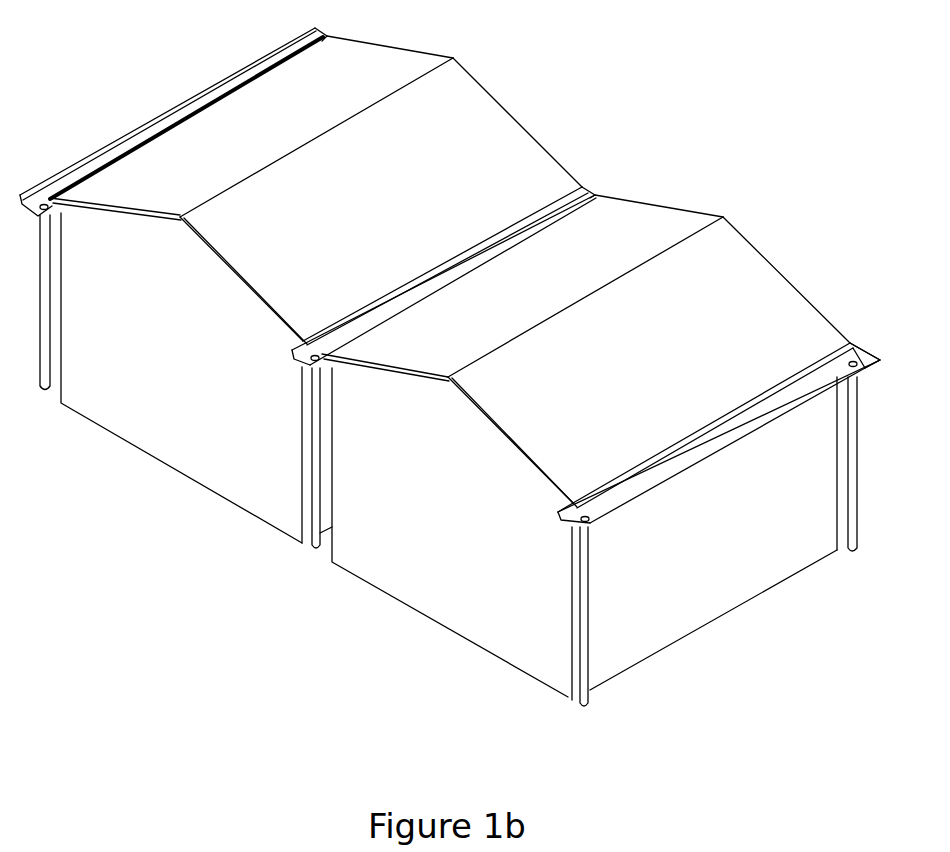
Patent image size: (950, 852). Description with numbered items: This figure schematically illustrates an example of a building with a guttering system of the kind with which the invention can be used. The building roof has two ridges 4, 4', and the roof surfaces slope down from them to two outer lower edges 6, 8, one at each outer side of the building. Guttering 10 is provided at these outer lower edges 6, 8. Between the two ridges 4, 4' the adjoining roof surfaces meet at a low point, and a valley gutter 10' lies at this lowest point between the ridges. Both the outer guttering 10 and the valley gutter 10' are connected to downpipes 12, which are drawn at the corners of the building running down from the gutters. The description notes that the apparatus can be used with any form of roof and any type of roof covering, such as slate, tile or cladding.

The ridge 4 is at (350, 117).
The ridge 4' is at (587, 340).
The outer lower edge 6 is at (133, 128).
The outer lower edge 8 is at (853, 345).
The guttering 10 is at (463, 275).
The valley gutter 10' is at (483, 250).
The downpipe 12 is at (44, 390).